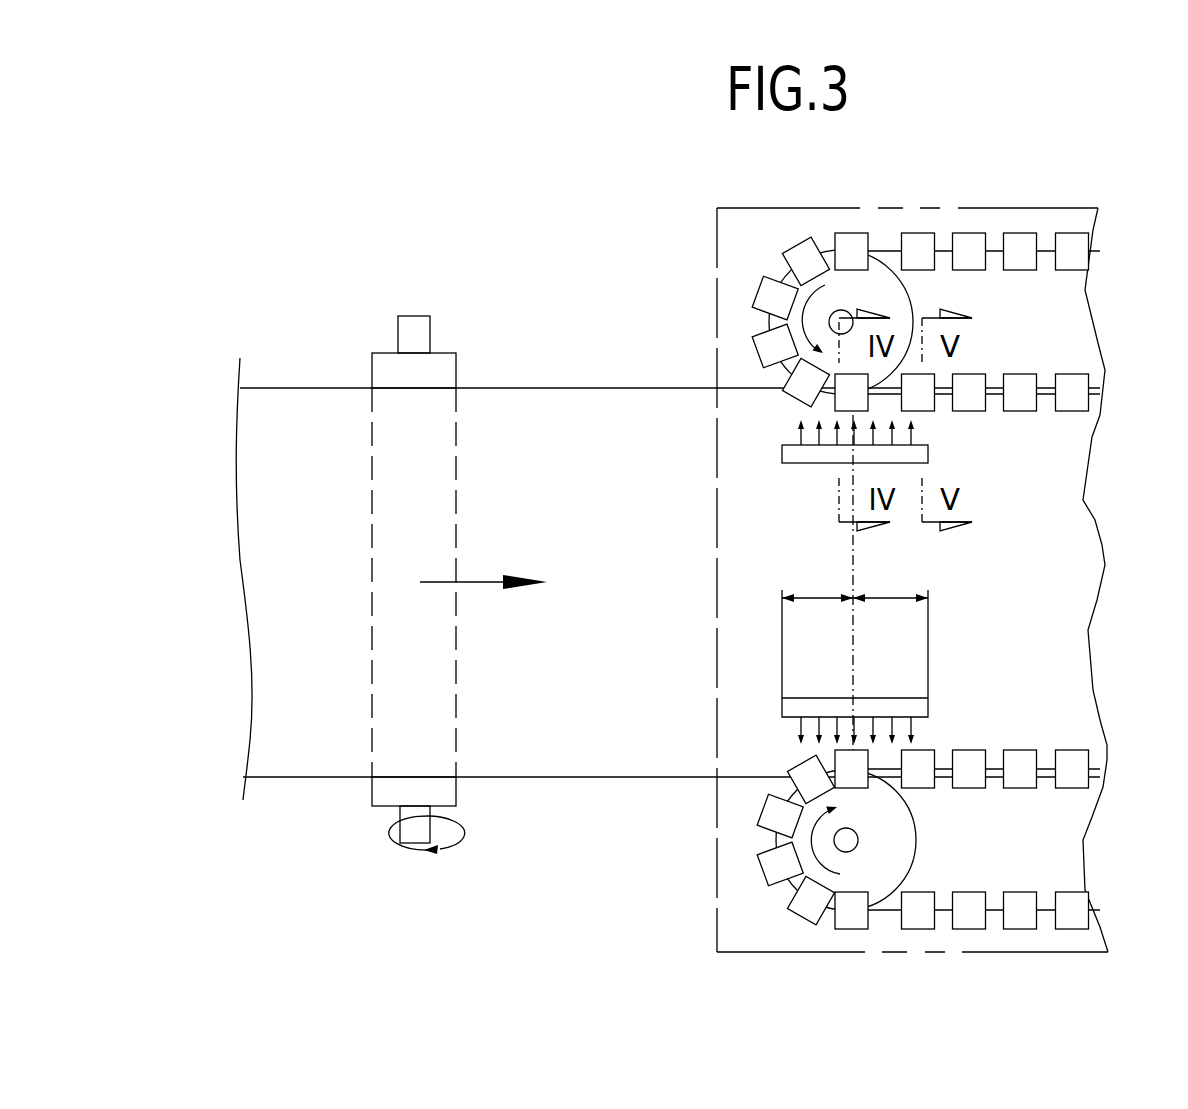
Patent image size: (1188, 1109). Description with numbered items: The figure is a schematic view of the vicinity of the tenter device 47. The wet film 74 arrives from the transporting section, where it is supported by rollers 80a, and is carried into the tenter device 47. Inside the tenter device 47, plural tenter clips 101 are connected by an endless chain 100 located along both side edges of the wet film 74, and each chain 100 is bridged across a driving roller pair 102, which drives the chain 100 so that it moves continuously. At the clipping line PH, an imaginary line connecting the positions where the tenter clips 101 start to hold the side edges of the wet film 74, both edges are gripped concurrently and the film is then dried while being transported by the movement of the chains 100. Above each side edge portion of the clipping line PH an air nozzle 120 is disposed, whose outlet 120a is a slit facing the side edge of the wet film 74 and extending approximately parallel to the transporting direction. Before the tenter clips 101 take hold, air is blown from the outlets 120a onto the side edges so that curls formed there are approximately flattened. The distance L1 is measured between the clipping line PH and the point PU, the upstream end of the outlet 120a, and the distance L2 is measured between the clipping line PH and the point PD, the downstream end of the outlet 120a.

The tenter device 47 is at (1040, 195).
The wet film 74 is at (582, 387).
The roller 80a is at (412, 316).
The endless chain 100 is at (1043, 390).
The tenter clip 101 is at (973, 412).
The driving roller pair 102 is at (892, 288).
The air nozzle 120 is at (797, 475).
The outlet 120a is at (793, 444).
The distance L1 is at (817, 578).
The distance L2 is at (890, 578).
The clipping line PH is at (855, 612).
The point PD is at (928, 718).
The point PU is at (790, 726).